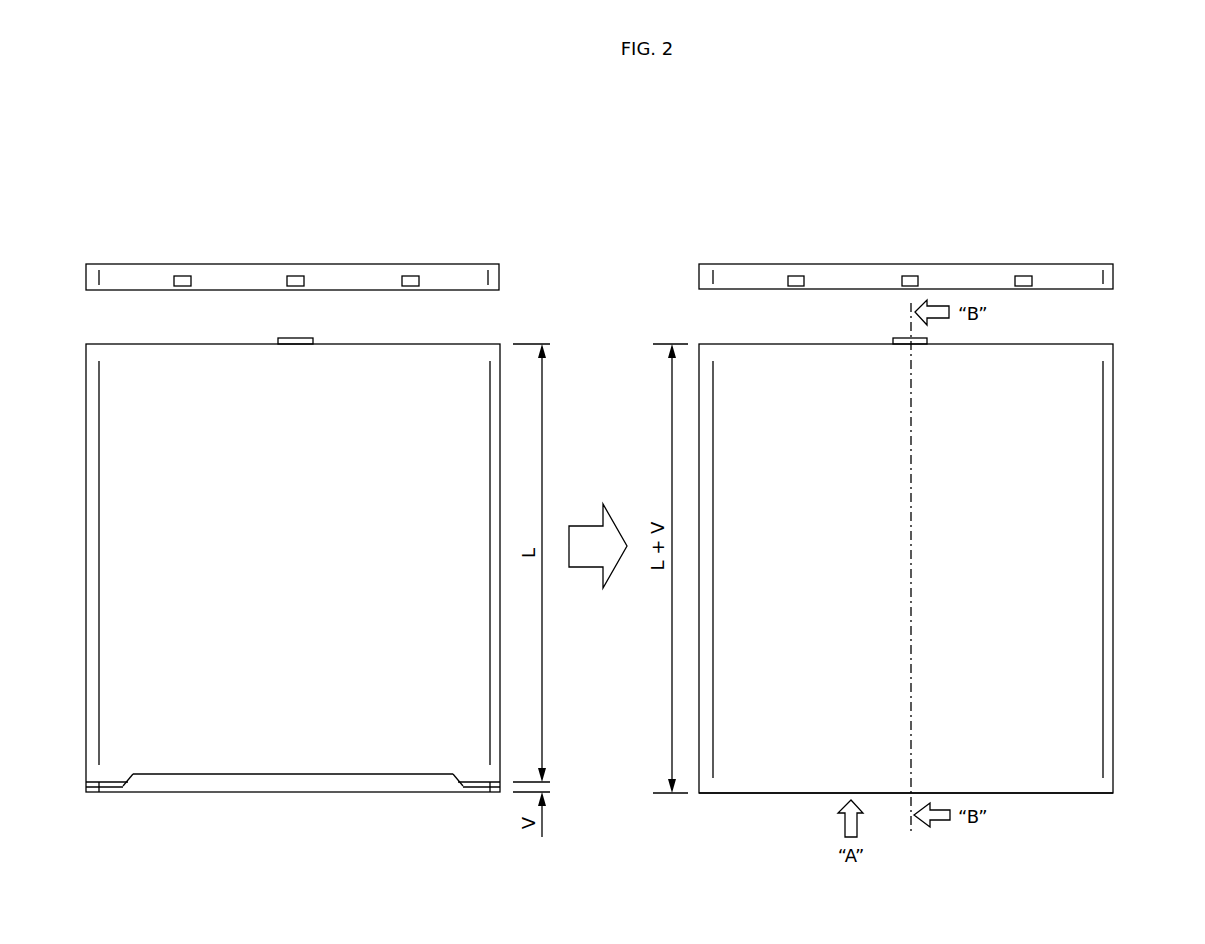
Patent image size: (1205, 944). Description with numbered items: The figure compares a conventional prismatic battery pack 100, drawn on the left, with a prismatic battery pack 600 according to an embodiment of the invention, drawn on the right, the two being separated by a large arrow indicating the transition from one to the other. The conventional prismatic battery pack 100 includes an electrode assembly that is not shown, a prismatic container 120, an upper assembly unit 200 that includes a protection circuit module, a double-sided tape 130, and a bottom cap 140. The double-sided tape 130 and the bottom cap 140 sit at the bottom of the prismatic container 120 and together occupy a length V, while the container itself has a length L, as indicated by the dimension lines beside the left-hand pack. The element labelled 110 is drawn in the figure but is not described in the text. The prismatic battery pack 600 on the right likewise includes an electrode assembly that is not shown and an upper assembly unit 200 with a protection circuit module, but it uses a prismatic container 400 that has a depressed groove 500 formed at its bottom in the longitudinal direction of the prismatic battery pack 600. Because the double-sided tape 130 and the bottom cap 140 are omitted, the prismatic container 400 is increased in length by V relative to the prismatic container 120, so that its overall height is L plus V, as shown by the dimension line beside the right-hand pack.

The conventional prismatic battery pack 100 is at (323, 231).
The light source bar 110 is at (499, 264).
The prismatic container 120 is at (500, 344).
The double-sided tape 130 is at (498, 789).
The bottom cap 140 is at (330, 795).
The upper assembly unit 200 is at (1113, 264).
The prismatic container 400 is at (1113, 344).
The depressed groove 500 is at (1042, 800).
The prismatic battery pack 600 is at (935, 231).